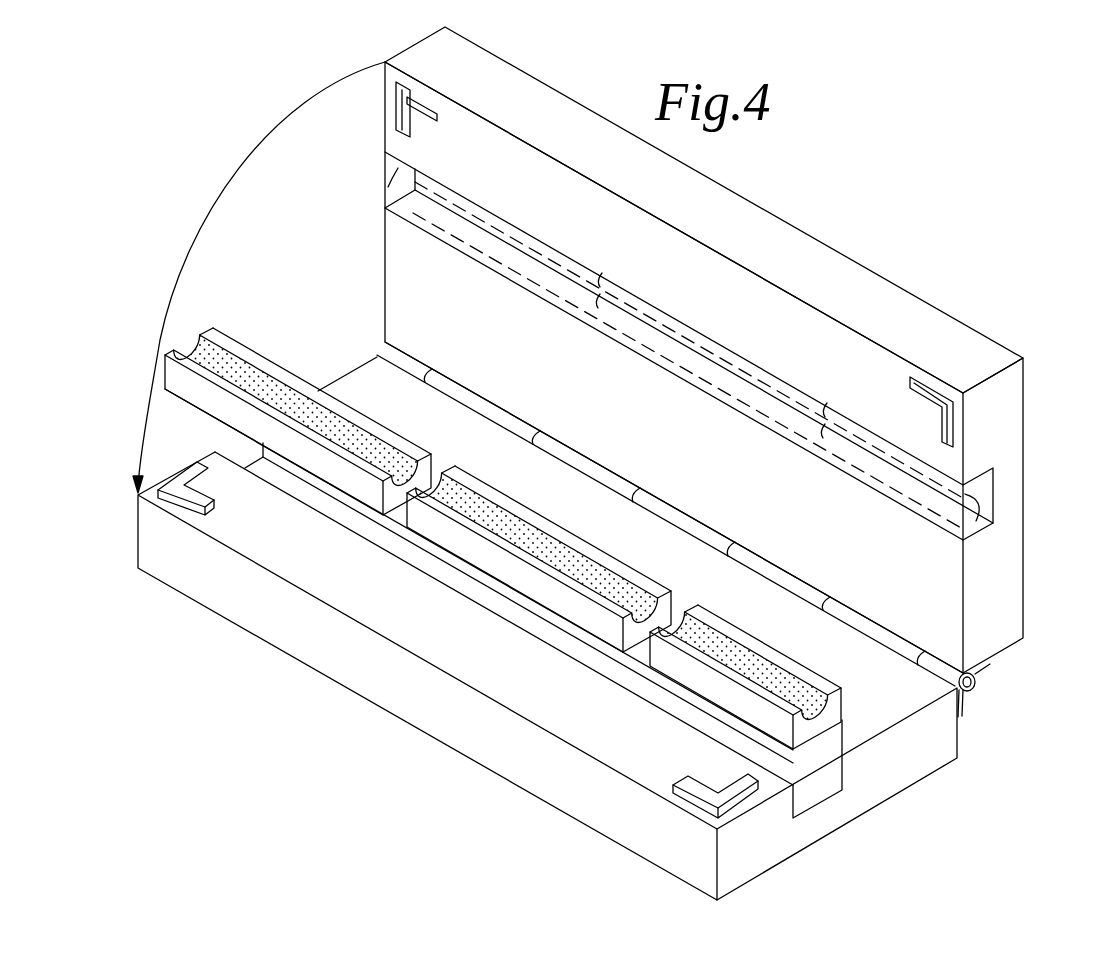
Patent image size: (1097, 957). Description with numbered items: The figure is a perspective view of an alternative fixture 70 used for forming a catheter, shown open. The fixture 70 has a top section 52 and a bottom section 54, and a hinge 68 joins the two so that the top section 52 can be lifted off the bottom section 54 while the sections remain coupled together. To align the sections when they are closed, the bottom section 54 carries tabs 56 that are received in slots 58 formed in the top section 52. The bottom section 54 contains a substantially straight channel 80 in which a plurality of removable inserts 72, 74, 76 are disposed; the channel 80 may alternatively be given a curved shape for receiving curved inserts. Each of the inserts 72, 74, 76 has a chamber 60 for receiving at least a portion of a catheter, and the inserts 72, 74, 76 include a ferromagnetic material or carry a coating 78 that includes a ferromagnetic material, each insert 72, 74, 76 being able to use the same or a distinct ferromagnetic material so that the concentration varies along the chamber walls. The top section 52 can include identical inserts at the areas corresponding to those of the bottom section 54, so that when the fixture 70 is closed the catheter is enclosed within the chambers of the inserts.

The top section 52 is at (810, 262).
The bottom section 54 is at (953, 736).
The tabs 56 is at (160, 494).
The slots 58 is at (427, 103).
The chamber 60 is at (215, 348).
The hinge 68 is at (976, 686).
The fixture 70 is at (195, 703).
The insert 72 is at (298, 395).
The insert 74 is at (533, 578).
The insert 76 is at (832, 713).
The coating 78 is at (543, 545).
The channel 80 is at (813, 790).